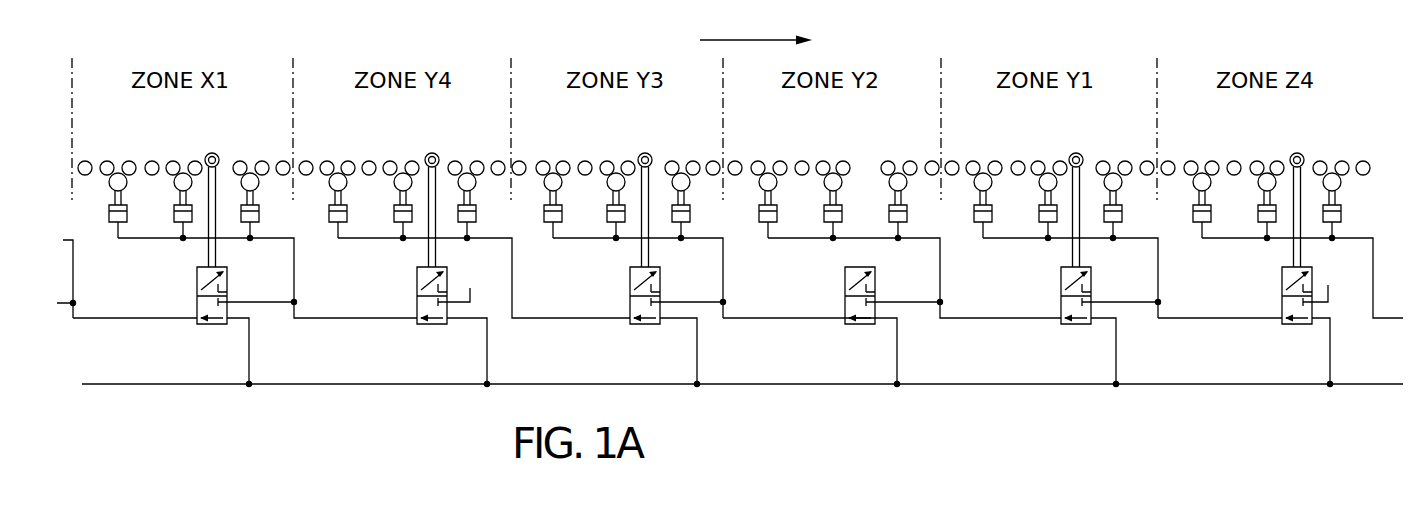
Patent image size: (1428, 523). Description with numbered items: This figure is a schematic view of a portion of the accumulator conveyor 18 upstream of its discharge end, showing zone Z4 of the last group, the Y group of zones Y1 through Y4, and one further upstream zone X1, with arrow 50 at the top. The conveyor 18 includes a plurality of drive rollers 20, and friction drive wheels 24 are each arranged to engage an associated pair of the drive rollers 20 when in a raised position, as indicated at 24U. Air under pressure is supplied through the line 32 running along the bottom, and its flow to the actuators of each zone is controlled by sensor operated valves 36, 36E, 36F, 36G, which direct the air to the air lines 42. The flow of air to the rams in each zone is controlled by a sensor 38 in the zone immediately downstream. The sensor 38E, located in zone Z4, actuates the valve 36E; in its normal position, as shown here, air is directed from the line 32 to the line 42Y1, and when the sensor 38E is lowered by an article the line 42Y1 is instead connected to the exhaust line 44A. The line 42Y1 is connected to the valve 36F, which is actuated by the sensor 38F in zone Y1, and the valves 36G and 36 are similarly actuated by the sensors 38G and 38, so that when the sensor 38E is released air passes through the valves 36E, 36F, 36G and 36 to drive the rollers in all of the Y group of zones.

The direction of conveyance 50 is at (742, 40).
The sensor 38G is at (432, 153).
The sensor 38 is at (645, 153).
The sensor 38F is at (1076, 153).
The sensor 38E is at (1297, 153).
The drive rollers 20 is at (781, 161).
The accumulator conveyor 18 is at (1411, 223).
The friction drive wheel 24 is at (777, 183).
The raised position of friction drive wheel 24U is at (688, 184).
The sensor operated valve 36 is at (655, 278).
The valve 36G is at (870, 278).
The valve 36F is at (1061, 291).
The valve 36E is at (1282, 283).
The exhaust line 44A is at (1328, 288).
The air line 42 is at (762, 318).
The line 42Y1 is at (1197, 318).
The air supply line 32 is at (1078, 385).